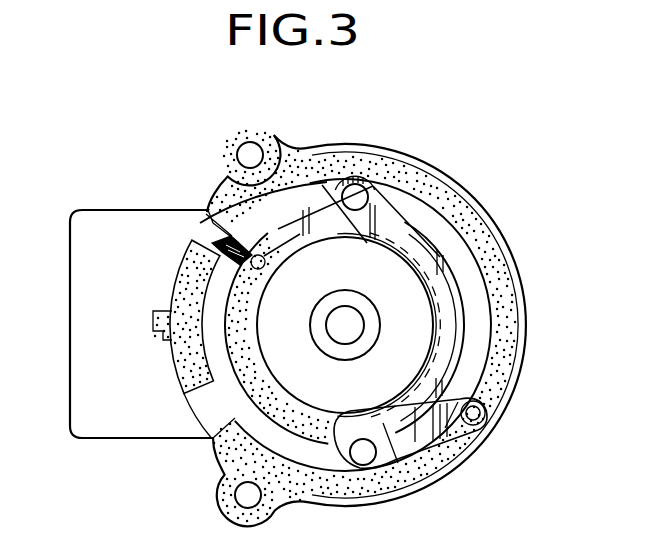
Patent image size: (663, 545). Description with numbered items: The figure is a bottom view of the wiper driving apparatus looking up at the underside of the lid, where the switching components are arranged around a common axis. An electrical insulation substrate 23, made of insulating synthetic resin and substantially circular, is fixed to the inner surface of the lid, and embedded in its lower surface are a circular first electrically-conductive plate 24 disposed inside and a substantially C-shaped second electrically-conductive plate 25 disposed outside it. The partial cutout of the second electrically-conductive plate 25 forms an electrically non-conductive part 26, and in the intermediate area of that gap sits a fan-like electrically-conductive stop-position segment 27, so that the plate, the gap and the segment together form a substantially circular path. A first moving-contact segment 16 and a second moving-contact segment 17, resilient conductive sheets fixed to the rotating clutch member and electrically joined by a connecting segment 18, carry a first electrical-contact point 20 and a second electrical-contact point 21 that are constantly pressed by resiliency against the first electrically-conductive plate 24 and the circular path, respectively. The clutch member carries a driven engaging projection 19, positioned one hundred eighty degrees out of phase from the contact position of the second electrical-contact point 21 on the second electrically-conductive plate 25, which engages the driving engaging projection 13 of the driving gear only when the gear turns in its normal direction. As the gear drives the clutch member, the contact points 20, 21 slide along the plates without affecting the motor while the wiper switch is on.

The driving engaging projection 13 is at (195, 238).
The first moving-contact segment 16 is at (293, 243).
The second moving-contact segment 17 is at (420, 438).
The connecting segment 18 is at (453, 325).
The driven engaging projection 19 is at (212, 222).
The first electrical-contact point 20 is at (280, 287).
The second electrical-contact point 21 is at (482, 416).
The electrical insulation substrate 23 is at (477, 203).
The first electrically-conductive plate 24 is at (283, 400).
The second electrically-conductive plate 25 is at (510, 292).
The electrically non-conductive part 26 is at (213, 412).
The electrically-conductive stop-position segment 27 is at (185, 378).